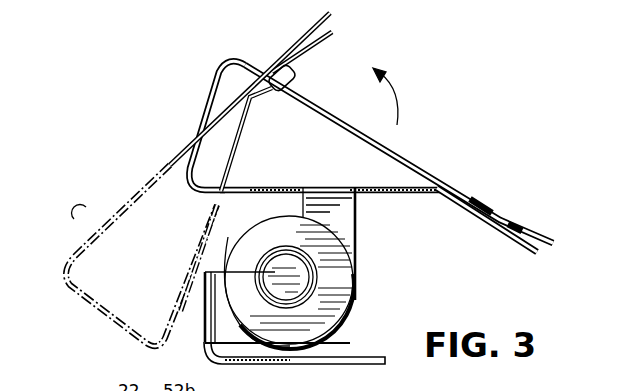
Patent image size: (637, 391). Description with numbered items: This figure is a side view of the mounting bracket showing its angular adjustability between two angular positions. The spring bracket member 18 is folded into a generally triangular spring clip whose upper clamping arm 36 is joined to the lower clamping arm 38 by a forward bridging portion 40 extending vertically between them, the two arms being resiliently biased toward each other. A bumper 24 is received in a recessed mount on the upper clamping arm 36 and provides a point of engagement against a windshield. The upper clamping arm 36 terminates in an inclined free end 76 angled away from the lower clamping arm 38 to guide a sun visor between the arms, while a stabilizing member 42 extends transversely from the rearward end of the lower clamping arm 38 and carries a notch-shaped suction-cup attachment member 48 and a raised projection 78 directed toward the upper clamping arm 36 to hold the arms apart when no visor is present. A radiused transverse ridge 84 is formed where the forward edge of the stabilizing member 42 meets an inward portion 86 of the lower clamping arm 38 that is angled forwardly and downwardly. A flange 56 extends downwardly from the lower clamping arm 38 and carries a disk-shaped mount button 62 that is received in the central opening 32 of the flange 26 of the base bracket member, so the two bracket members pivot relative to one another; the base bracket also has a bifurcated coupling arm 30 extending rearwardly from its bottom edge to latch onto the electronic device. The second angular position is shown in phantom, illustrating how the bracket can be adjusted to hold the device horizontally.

The spring bracket member 18 is at (133, 195).
The bumper 24 is at (296, 74).
The flange 26 is at (351, 303).
The bifurcated coupling arm 30 is at (372, 366).
The central opening 32 is at (356, 263).
The upper clamping arm 36 is at (418, 165).
The lower clamping arm 38 is at (222, 191).
The forward bridging portion 40 is at (211, 108).
The stabilizing member 42 is at (333, 38).
The suction-cup attachment member 48 is at (500, 232).
The flange 56 is at (237, 233).
The mount button 62 is at (205, 272).
The inclined free end 76 is at (323, 22).
The raised projection 78 is at (503, 223).
The radiused transverse ridge 84 is at (438, 188).
The inward portion 86 is at (278, 187).